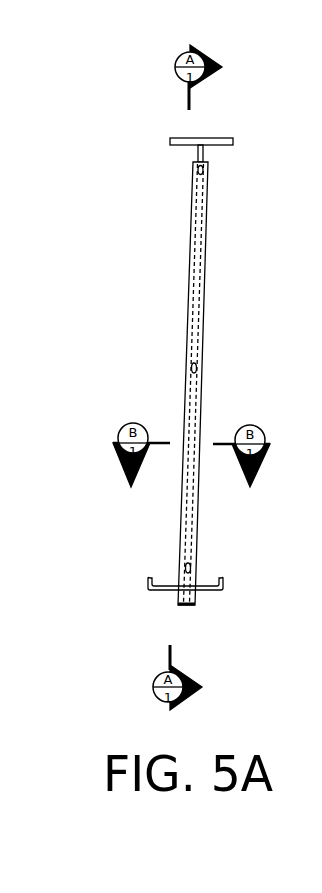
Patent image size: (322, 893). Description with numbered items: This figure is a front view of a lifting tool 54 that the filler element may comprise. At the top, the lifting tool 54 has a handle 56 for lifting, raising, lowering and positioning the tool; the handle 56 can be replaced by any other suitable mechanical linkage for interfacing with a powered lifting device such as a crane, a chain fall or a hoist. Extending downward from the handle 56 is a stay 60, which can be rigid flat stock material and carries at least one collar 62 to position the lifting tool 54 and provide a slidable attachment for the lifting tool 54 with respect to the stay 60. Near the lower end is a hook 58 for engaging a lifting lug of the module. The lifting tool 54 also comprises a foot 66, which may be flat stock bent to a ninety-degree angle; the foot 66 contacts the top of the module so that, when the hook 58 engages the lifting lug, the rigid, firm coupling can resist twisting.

The lifting tool 54 is at (152, 269).
The handle 56 is at (185, 137).
The hook 58 is at (224, 587).
The stay 60 is at (178, 523).
The collar 62 is at (206, 173).
The foot 66 is at (194, 605).